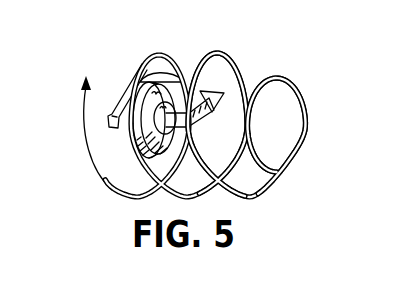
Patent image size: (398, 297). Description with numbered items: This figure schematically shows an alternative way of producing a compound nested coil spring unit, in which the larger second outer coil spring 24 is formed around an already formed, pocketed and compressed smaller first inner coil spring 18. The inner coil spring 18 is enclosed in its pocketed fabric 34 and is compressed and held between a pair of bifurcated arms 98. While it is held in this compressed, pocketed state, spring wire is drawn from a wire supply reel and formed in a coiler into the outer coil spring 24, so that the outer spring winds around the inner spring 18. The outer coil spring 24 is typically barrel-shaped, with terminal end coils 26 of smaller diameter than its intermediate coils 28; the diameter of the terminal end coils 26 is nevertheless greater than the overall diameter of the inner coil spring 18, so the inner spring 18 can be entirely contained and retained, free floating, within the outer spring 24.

The first inner coil spring 18 is at (123, 153).
The second outer coil spring 24 is at (287, 77).
The terminal end coils 26 is at (303, 98).
The intermediate coils 28 is at (218, 54).
The pocketed fabric 34 is at (126, 138).
The bifurcated arms 98 is at (120, 103).